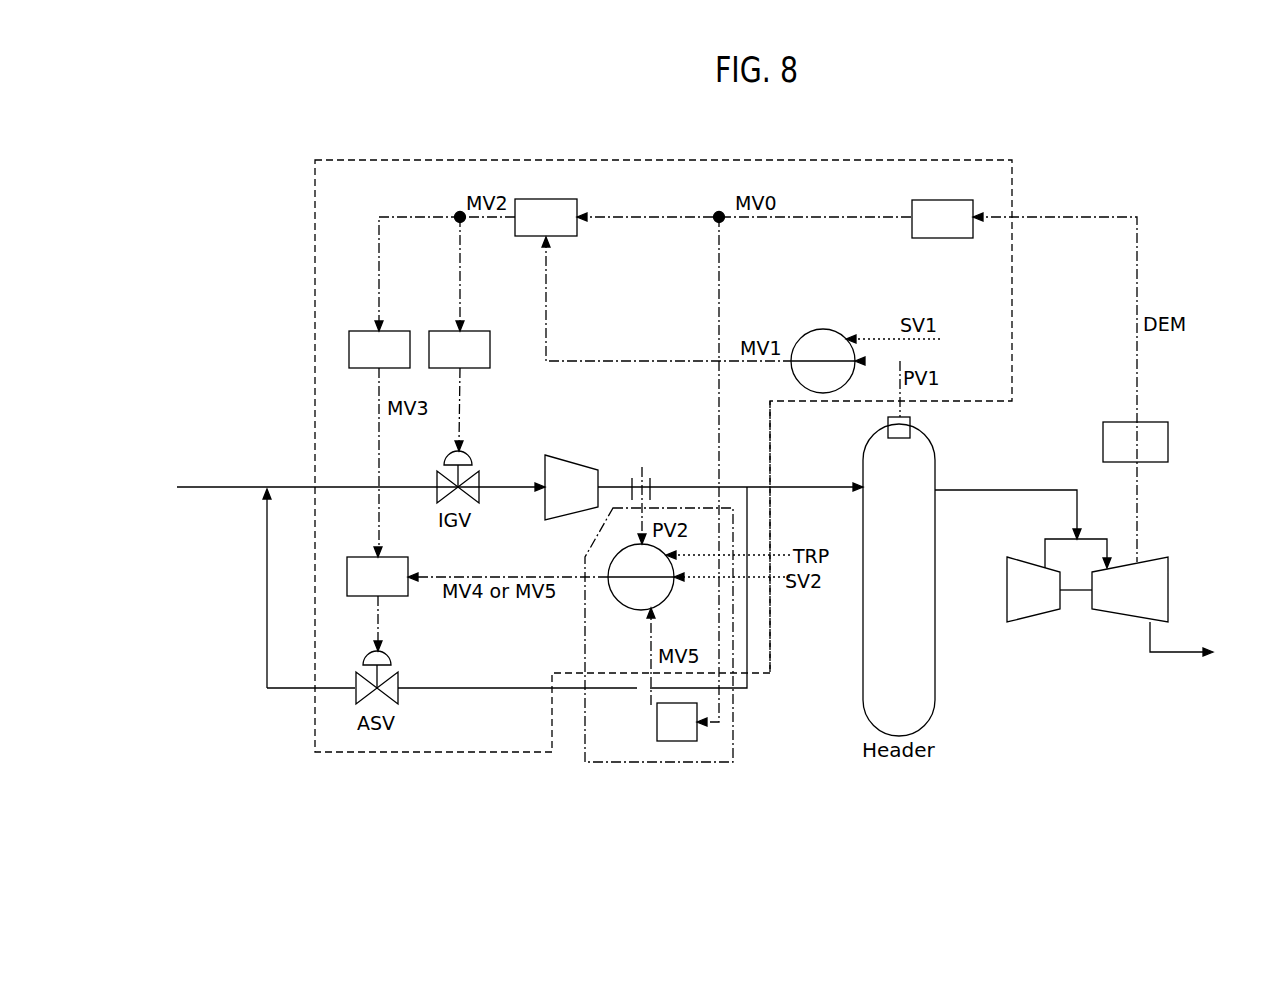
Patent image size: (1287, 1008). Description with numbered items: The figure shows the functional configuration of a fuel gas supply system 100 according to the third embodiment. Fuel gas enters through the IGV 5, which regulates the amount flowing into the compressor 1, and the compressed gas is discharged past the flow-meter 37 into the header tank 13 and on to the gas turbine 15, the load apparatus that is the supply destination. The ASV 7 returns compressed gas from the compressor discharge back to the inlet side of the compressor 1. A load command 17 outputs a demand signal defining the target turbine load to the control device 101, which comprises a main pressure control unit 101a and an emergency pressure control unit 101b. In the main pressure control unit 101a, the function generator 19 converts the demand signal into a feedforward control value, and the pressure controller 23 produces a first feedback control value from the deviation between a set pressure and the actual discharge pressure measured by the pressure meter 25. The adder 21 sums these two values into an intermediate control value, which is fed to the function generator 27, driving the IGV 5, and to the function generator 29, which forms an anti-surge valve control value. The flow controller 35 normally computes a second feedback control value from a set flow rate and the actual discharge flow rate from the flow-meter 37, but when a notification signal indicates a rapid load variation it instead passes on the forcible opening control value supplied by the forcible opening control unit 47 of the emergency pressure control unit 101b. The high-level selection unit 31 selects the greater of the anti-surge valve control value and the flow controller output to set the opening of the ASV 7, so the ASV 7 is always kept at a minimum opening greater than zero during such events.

The fuel gas supply system 100 is at (1074, 158).
The compressor 1 is at (575, 455).
The inlet guide vane (IGV) 5 is at (481, 478).
The anti-surge valve (ASV) 7 is at (400, 681).
The header tank 13 is at (935, 672).
The gas turbine 15 is at (1115, 615).
The load command 17 is at (1168, 442).
The function generator 19 is at (945, 238).
The adder 21 is at (566, 238).
The pressure controller (PC) 23 is at (838, 332).
The pressure meter 25 is at (910, 420).
The function generator 27 is at (472, 331).
The function generator 29 is at (392, 331).
The high-level selection unit (HS) 31 is at (410, 590).
The flow controller (FC) 35 is at (612, 603).
The flow-meter 37 is at (642, 467).
The forcible opening control unit 47 is at (675, 741).
The control device 101 is at (837, 822).
The main pressure control unit 101a is at (770, 658).
The emergency pressure control unit 101b is at (713, 764).